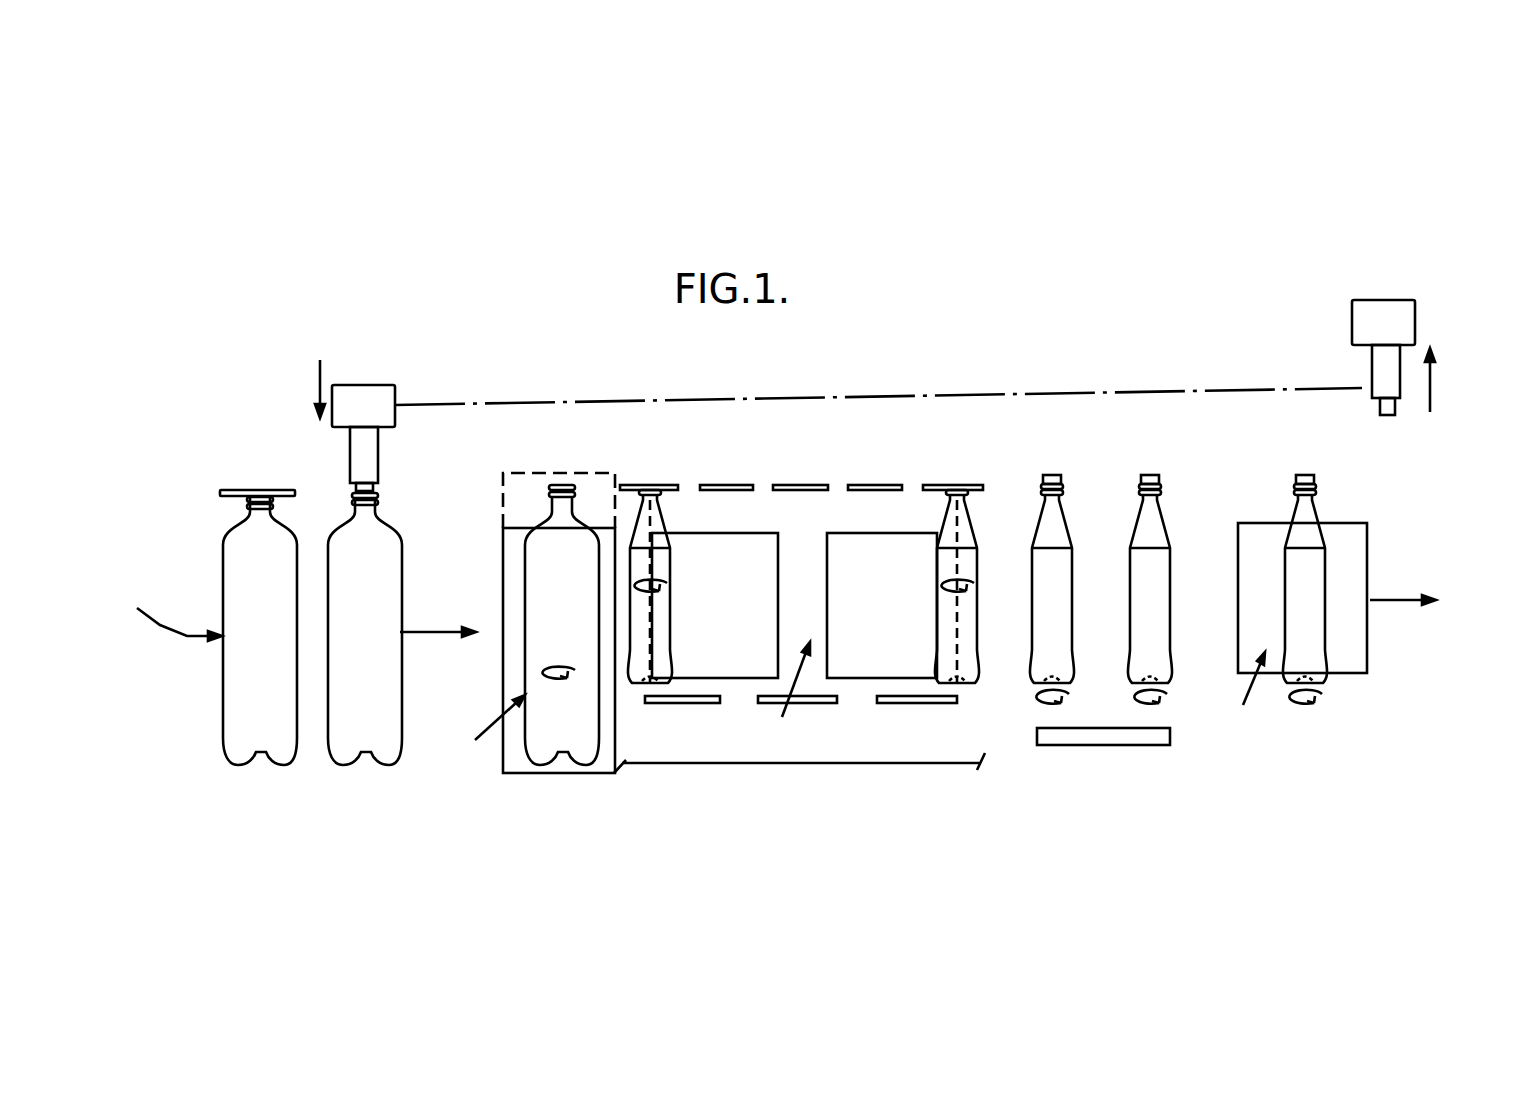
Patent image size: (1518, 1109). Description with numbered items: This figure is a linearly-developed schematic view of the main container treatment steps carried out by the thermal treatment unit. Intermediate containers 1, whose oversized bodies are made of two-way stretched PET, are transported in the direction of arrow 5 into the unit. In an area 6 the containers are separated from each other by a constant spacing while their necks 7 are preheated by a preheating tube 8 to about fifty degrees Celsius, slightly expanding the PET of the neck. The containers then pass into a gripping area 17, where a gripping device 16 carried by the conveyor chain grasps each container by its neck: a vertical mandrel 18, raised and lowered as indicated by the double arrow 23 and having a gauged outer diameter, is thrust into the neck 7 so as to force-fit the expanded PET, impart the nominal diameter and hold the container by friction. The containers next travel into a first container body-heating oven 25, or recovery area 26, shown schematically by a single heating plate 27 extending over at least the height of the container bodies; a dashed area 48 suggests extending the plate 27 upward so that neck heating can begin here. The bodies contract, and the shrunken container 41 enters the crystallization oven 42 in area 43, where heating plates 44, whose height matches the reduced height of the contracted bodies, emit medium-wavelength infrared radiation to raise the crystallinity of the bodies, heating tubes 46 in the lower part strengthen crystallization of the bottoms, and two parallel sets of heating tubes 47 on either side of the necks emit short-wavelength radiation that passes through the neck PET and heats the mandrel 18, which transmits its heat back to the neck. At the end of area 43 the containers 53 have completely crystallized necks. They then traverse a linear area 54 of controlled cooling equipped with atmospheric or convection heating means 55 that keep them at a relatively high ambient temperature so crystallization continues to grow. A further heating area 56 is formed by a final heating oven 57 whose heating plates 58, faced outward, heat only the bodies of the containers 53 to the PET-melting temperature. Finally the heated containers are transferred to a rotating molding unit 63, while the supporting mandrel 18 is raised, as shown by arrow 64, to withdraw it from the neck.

The intermediate container 1 is at (250, 702).
The arrow 5 is at (174, 632).
The area 6 is at (238, 642).
The neck 7 is at (259, 492).
The preheating tube 8 is at (228, 492).
The gripping device 16 is at (388, 378).
The gripping area 17 is at (370, 578).
The mandrel 18 is at (356, 486).
The double arrow 23 is at (318, 378).
The first container body-heating oven 25 is at (489, 733).
The recovery area 26 is at (533, 629).
The heating plate 27 is at (517, 593).
The container 41 is at (647, 570).
The crystallization oven 42 is at (788, 695).
The area 43 is at (799, 627).
The heating plate 44 is at (857, 588).
The heating tube 46 is at (910, 700).
The heating tube 47 is at (805, 483).
The dashed area 48 is at (520, 493).
The container 53 is at (1152, 652).
The linear area 54 is at (1103, 776).
The atmospheric or convection heating means 55 is at (1088, 745).
The heating area 56 is at (1333, 651).
The final heating oven 57 is at (1248, 697).
The heating plate 58 is at (1350, 540).
The rotating molding unit 63 is at (1403, 584).
The arrow 64 is at (1432, 385).